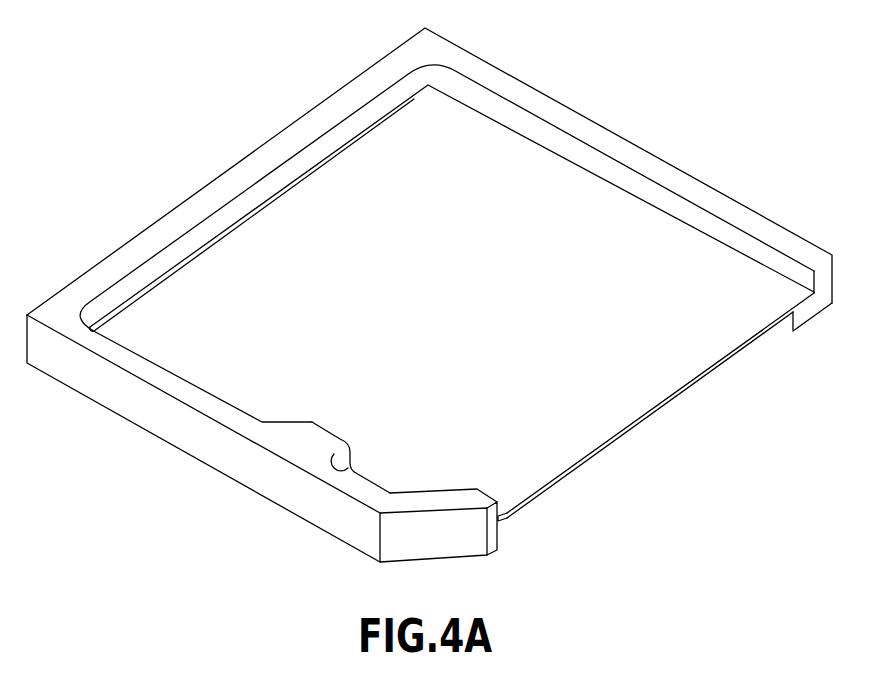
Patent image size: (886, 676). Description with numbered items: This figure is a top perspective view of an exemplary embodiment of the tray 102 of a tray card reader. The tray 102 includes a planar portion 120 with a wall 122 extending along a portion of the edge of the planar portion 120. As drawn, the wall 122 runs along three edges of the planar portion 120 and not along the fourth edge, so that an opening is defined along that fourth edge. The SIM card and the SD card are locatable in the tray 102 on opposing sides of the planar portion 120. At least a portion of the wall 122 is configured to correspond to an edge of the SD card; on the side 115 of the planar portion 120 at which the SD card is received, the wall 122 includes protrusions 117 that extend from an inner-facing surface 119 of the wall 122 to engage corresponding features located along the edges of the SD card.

The tray 102 is at (643, 84).
The side of the planar portion 115 is at (592, 427).
The protrusions 117 is at (331, 433).
The inner-facing surface 119 is at (515, 111).
The planar portion 120 is at (721, 362).
The wall 122 is at (743, 205).